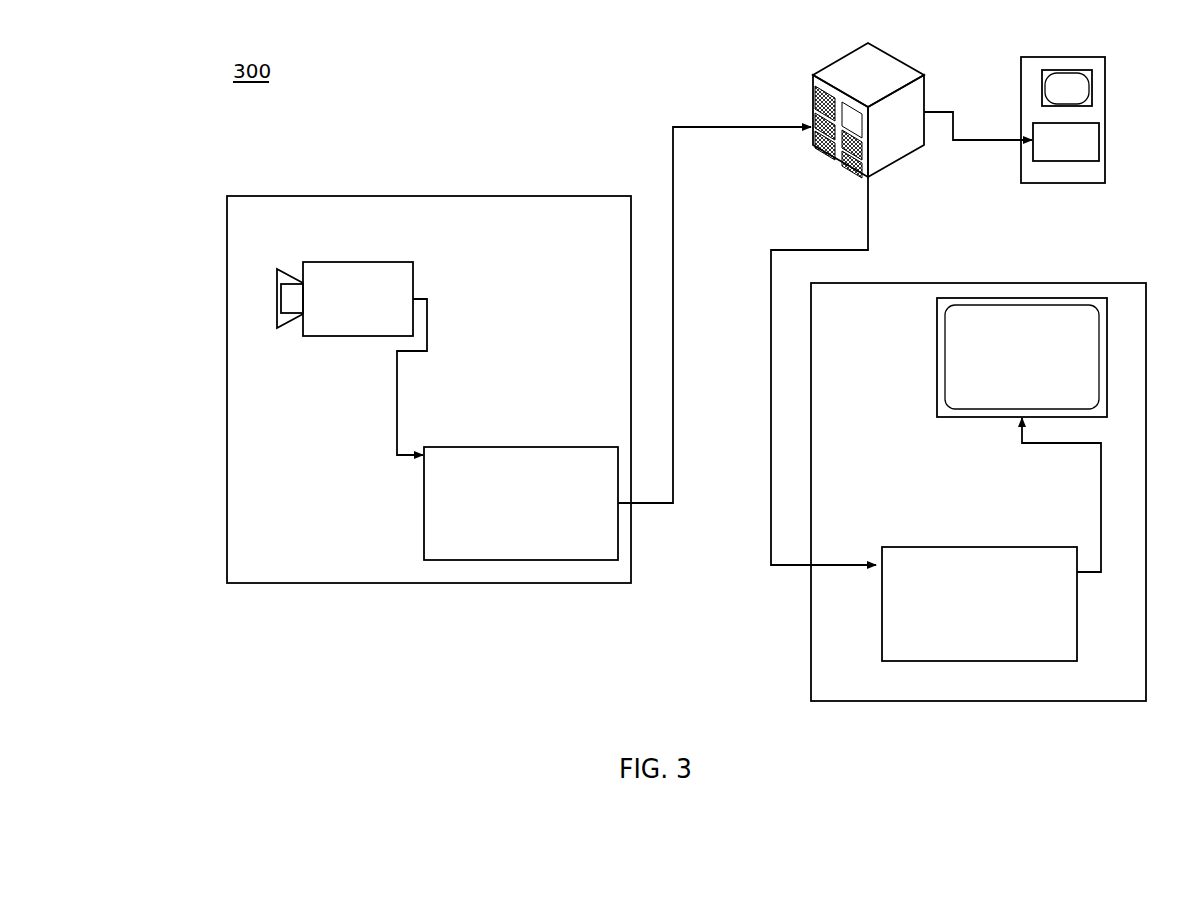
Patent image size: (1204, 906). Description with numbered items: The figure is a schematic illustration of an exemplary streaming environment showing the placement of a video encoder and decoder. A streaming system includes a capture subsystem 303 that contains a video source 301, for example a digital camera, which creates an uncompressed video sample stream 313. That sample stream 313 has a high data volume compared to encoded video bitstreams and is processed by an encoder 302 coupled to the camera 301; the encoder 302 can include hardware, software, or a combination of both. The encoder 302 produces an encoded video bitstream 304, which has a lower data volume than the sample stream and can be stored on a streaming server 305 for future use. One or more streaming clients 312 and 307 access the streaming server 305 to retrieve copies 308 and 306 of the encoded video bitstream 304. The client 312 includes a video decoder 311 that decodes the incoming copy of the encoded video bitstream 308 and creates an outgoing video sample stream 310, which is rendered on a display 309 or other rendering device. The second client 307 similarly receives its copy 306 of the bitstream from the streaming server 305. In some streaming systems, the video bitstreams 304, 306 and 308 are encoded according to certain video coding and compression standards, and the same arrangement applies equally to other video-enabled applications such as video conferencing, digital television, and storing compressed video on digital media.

The video source 301 is at (355, 260).
The encoder 302 is at (533, 445).
The capture subsystem 303 is at (417, 588).
The encoded video bitstream 304 is at (672, 152).
The streaming server 305 is at (812, 97).
The copy of the encoded video bitstream 306 is at (980, 145).
The streaming client 307 is at (1110, 82).
The copy of the encoded video bitstream 308 is at (769, 413).
The display 309 is at (935, 348).
The outgoing video sample stream 310 is at (1100, 508).
The video decoder 311 is at (880, 632).
The streaming client 312 is at (812, 645).
The uncompressed video sample stream 313 is at (395, 413).